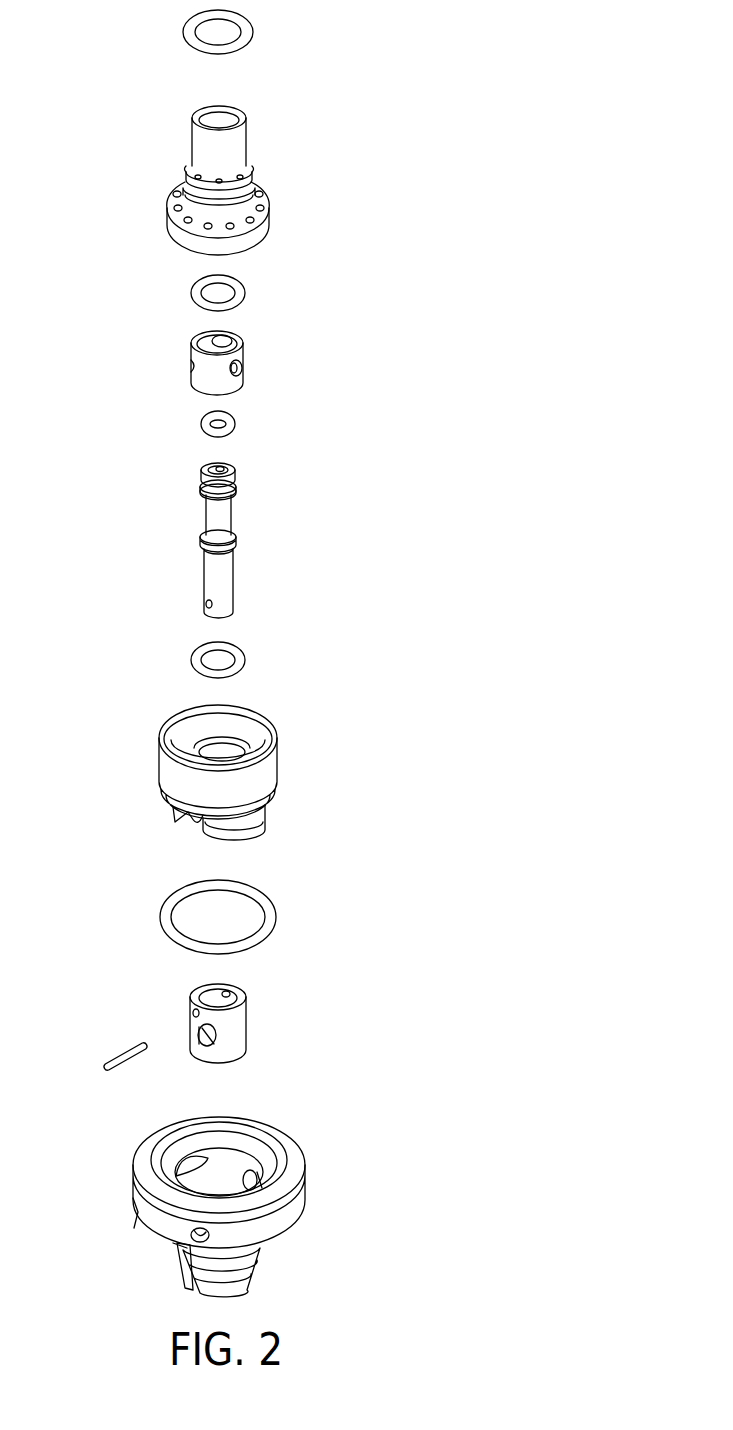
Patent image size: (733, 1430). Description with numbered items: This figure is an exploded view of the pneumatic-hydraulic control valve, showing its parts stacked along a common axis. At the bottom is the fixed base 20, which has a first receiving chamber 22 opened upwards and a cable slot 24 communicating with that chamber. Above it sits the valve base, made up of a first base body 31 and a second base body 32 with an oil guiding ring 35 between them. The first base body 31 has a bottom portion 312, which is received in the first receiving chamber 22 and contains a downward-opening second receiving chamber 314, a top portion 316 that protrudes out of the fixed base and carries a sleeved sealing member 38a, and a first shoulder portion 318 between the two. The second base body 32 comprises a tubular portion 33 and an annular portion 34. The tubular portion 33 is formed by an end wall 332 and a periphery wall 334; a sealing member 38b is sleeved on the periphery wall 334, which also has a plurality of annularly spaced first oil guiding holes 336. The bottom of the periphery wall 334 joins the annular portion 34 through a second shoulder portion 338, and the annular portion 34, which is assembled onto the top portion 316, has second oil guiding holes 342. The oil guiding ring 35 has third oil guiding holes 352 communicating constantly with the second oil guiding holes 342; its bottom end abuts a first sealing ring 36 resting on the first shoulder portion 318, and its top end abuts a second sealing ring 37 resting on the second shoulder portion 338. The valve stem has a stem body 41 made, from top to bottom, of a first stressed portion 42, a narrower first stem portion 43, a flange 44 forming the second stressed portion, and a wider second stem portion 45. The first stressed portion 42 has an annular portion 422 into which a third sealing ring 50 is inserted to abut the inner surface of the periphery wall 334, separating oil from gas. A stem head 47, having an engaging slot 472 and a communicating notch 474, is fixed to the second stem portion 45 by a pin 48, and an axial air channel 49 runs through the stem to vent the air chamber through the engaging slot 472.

The fixed base 20 is at (318, 1233).
The first receiving chamber 22 is at (228, 1160).
The cable slot 24 is at (187, 1262).
The first base body 31 is at (294, 731).
The bottom portion 312 is at (242, 824).
The second receiving chamber 314 is at (190, 822).
The top portion 316 is at (265, 765).
The first shoulder portion 318 is at (187, 740).
The second base body 32 is at (300, 126).
The tubular portion 33 is at (86, 50).
The end wall 332 is at (215, 117).
The periphery wall 334 is at (198, 150).
The first oil guiding holes 336 is at (186, 172).
The second shoulder portion 338 is at (240, 210).
The annular portion 34 is at (213, 220).
The second oil guiding holes 342 is at (240, 186).
The oil guiding ring 35 is at (266, 345).
The third oil guiding holes 352 is at (241, 364).
The first sealing ring 36 is at (196, 657).
The second sealing ring 37 is at (193, 292).
The sealing member 38a is at (272, 917).
The sealing member 38b is at (248, 30).
The stem body 41 is at (270, 548).
The first stressed portion 42 is at (208, 466).
The annular portion 422 is at (200, 480).
The first stem portion 43 is at (212, 514).
The flange 44 is at (205, 539).
The second stem portion 45 is at (208, 580).
The stem head 47 is at (243, 1025).
The engaging slot 472 is at (195, 1031).
The notch 474 is at (200, 1052).
The pin 48 is at (118, 1053).
The axial air channel 49 is at (234, 465).
The third sealing ring 50 is at (233, 423).